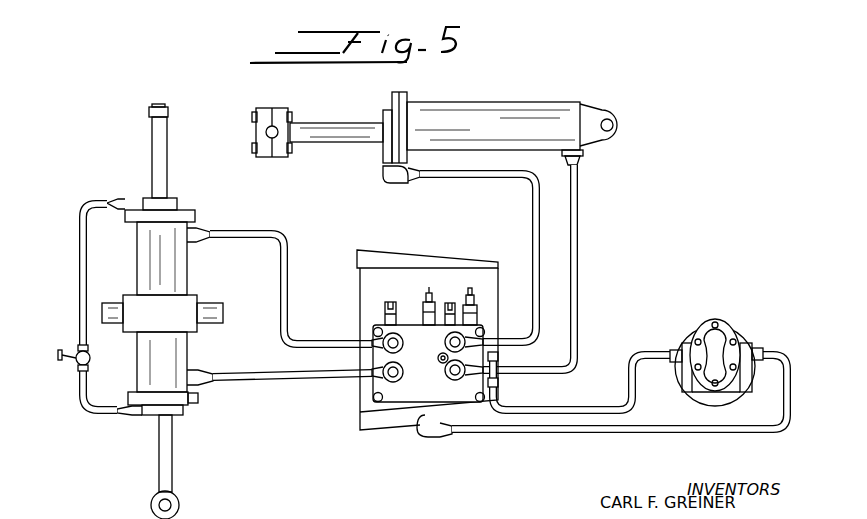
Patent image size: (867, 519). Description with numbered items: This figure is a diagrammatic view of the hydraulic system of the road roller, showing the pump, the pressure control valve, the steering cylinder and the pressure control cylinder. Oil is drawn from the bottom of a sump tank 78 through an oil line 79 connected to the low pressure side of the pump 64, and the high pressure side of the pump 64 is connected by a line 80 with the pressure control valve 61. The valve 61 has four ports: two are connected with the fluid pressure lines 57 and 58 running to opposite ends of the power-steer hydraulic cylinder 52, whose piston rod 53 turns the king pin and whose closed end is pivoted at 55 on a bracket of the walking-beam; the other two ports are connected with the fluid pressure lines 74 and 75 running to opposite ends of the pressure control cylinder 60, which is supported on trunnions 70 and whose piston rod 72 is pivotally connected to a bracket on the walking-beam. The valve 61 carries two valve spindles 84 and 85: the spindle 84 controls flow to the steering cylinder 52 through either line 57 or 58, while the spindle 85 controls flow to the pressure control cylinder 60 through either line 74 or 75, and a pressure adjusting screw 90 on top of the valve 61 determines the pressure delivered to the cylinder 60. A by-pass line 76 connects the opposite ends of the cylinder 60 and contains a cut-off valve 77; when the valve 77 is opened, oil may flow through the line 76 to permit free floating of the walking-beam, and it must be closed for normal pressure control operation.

The hydraulic cylinder 52 is at (582, 102).
The piston rod 53 is at (311, 126).
The pivot 55 is at (613, 124).
The fluid pressure line 57 is at (578, 207).
The fluid pressure line 58 is at (540, 284).
The cylinder 60 is at (188, 351).
The pressure control valve 61 is at (420, 397).
The pump 64 is at (728, 330).
The trunnions 70 is at (224, 311).
The piston rod 72 is at (171, 458).
The fluid pressure line 74 is at (284, 283).
The fluid pressure line 75 is at (276, 383).
The by-pass line 76 is at (81, 274).
The cut-off valve 77 is at (76, 366).
The sump tank 78 is at (398, 272).
The oil line 79 is at (618, 432).
The line 80 is at (548, 412).
The valve spindle 84 is at (443, 302).
The valve spindle 85 is at (388, 302).
The pressure adjusting screw 90 is at (428, 292).